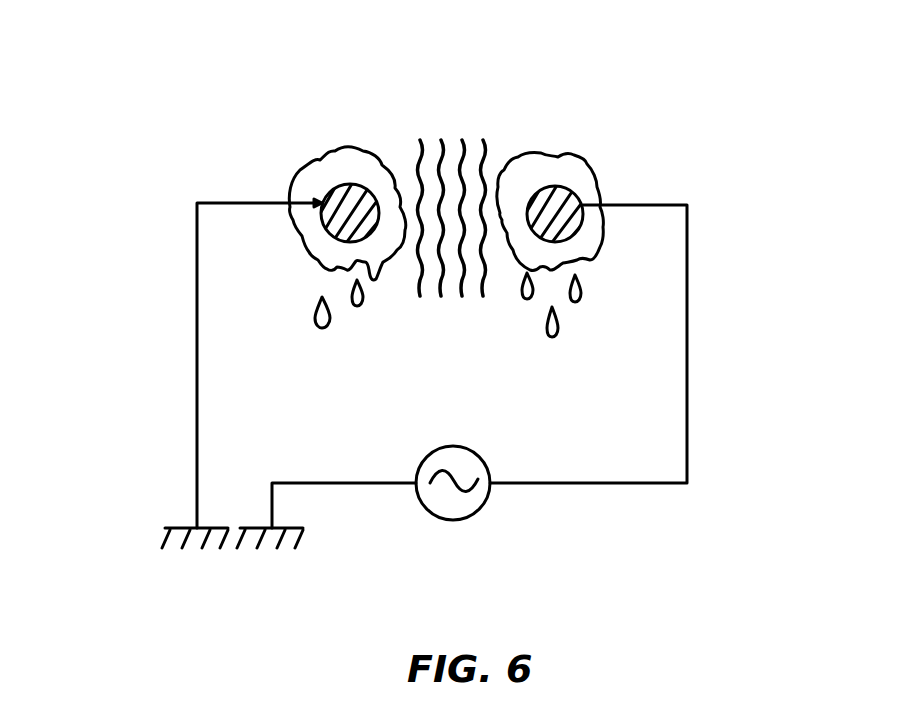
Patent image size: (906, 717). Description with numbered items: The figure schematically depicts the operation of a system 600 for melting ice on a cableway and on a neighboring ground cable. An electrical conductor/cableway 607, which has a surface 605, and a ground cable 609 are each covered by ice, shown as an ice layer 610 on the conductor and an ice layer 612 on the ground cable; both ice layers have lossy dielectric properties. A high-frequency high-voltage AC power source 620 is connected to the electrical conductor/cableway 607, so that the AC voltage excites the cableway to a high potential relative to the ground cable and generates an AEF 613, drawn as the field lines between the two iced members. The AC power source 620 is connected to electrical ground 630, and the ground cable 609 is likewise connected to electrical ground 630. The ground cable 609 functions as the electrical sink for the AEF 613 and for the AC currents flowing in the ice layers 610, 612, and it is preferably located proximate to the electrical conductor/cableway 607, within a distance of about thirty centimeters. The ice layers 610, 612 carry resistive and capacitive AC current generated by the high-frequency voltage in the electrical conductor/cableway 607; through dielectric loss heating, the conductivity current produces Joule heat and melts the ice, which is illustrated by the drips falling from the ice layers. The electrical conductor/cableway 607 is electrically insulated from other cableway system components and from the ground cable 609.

The system 600 is at (222, 88).
The surface 605 is at (587, 236).
The electrical conductor/cableway 607 is at (576, 199).
The ground cable 609 is at (347, 183).
The ice layer 610 is at (563, 158).
The ice layer 612 is at (362, 157).
The AEF 613 is at (455, 128).
The AC power source 620 is at (480, 497).
The electrical ground 630 is at (222, 566).